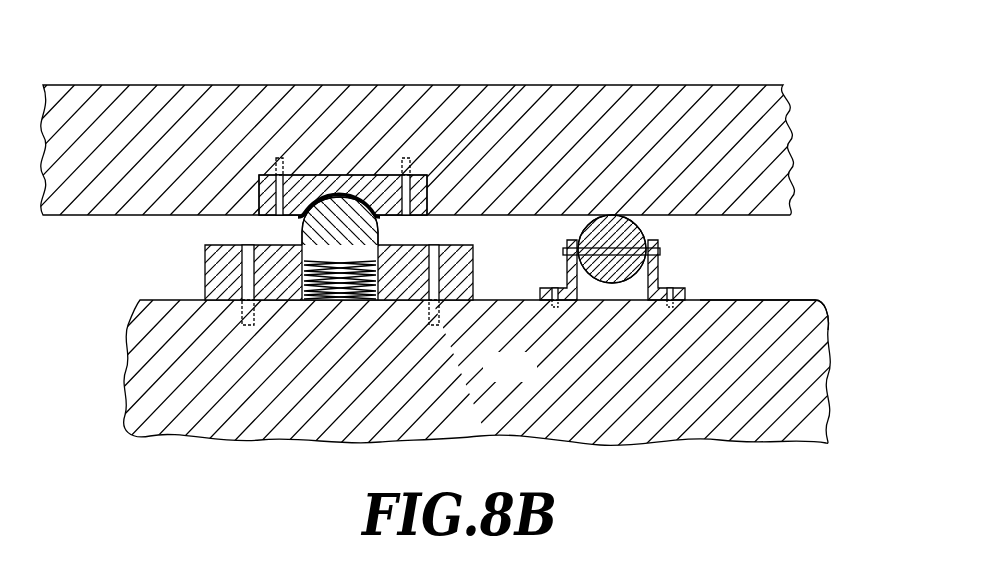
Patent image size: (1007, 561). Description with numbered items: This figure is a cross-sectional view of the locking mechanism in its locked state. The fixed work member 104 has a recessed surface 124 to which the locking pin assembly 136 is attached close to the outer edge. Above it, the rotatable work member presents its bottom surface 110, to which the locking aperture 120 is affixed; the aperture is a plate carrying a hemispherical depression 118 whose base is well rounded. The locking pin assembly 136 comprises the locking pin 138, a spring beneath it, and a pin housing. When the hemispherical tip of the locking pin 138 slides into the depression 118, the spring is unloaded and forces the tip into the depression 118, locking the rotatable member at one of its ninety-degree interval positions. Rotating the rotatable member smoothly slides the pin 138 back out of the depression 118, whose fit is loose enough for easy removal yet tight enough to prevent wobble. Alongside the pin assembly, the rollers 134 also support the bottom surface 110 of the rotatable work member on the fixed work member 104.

The fixed work member 104 is at (533, 379).
The bottom surface 110 is at (765, 215).
The hemispherical depression 118 is at (351, 195).
The locking aperture 120 is at (305, 215).
The recessed surface 124 is at (785, 300).
The rollers 134 is at (676, 253).
The locking pin assembly 136 is at (176, 270).
The locking pin 138 is at (379, 222).